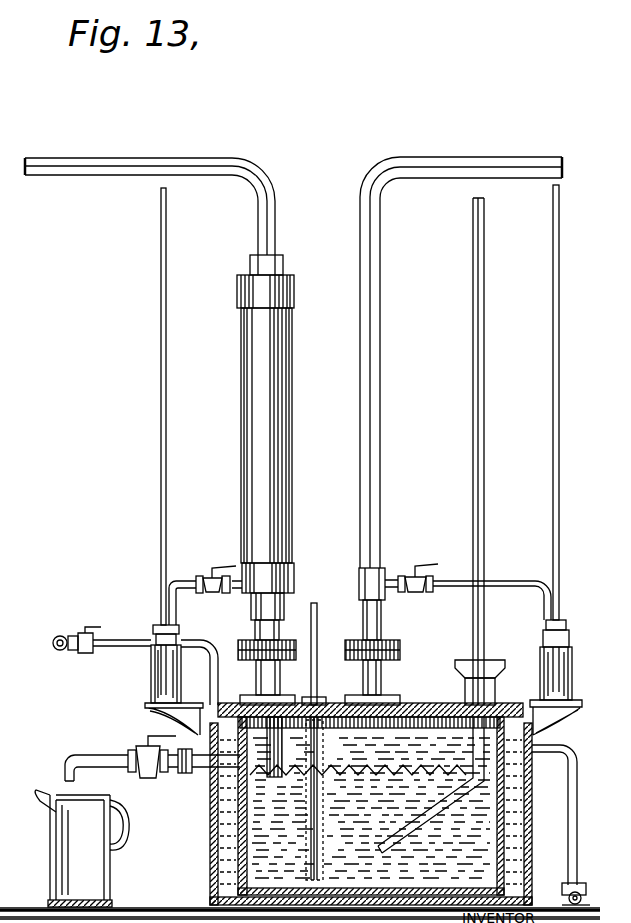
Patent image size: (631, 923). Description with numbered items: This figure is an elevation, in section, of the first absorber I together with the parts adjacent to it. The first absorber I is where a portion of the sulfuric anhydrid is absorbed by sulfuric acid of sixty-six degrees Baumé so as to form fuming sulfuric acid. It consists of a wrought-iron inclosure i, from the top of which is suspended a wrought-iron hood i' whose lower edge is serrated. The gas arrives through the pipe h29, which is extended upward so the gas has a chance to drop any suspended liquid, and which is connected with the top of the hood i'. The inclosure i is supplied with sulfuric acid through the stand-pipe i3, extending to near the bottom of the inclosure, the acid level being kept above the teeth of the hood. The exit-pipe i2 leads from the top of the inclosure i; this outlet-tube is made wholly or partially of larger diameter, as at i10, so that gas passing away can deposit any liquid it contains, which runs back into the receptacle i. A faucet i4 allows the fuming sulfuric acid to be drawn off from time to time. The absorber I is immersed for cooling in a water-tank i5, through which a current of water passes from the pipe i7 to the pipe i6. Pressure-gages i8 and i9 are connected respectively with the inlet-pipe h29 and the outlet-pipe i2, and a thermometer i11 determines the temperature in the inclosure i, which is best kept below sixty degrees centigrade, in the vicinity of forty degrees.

The exit-pipe i2 is at (276, 210).
The enlarged portion of outlet-tube i10 is at (240, 486).
The pipe h29 is at (383, 480).
The stand-pipe i3 is at (484, 545).
The thermometer i11 is at (318, 620).
The water inlet pipe i7 is at (102, 648).
The pressure-gage i9 is at (152, 683).
The pressure-gage i8 is at (540, 656).
The faucet i4 is at (128, 758).
The hood i' is at (209, 777).
The water-tank i5 is at (214, 815).
The inclosure i is at (341, 806).
The first absorber I is at (370, 808).
The water outlet pipe i6 is at (570, 828).